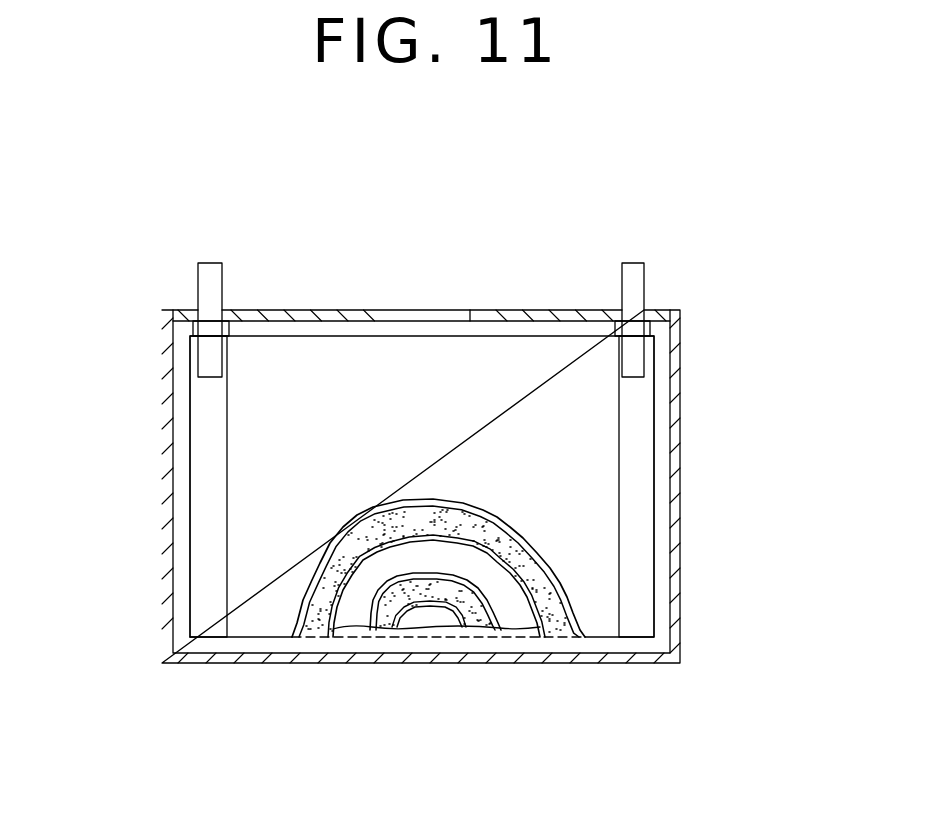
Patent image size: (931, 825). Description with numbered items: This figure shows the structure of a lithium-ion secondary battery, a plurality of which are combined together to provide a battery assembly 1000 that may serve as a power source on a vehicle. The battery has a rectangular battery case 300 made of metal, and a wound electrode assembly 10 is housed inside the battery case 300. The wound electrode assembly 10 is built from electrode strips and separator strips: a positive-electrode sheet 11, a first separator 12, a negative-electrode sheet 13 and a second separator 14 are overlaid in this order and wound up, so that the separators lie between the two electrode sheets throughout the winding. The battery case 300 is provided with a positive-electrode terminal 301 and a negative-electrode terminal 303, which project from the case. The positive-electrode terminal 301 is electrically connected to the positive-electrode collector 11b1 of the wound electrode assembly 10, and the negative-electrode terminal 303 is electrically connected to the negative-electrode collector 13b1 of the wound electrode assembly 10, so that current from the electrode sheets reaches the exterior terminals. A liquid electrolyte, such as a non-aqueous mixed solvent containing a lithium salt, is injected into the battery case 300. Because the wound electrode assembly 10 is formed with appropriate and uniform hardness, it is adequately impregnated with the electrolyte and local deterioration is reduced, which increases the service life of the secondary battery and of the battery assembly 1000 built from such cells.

The battery assembly 1000 is at (820, 180).
The battery case 300 is at (680, 575).
The positive-electrode terminal 301 is at (208, 267).
The negative-electrode terminal 303 is at (632, 267).
The wound electrode assembly 10 is at (332, 367).
The positive-electrode sheet 11 is at (315, 625).
The first separator 12 is at (260, 598).
The negative-electrode sheet 13 is at (390, 622).
The second separator 14 is at (355, 623).
The positive-electrode collector 11b1 is at (210, 516).
The negative-electrode collector 13b1 is at (637, 514).